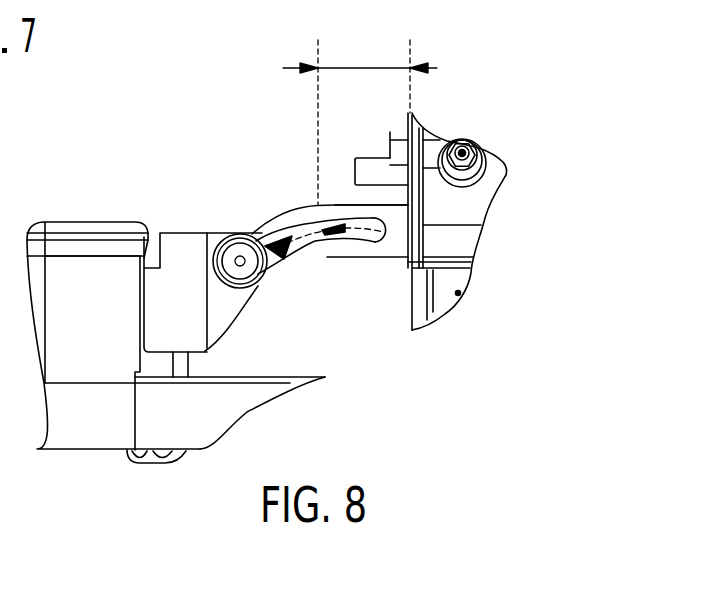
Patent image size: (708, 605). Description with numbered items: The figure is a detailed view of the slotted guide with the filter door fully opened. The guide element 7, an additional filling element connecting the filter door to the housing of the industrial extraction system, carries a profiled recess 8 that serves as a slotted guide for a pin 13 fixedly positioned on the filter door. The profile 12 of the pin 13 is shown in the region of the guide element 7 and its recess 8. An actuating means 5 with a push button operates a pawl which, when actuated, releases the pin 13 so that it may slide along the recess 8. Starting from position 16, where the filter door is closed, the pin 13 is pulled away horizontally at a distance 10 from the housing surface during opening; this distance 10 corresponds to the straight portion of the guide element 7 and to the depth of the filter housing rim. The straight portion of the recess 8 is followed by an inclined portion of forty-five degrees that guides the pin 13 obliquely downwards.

The actuating means 5 is at (238, 231).
The pin 13 is at (250, 247).
The profiled recess 8 is at (330, 242).
The profile 12 is at (297, 260).
The guide element 7 is at (323, 247).
The position 16 is at (378, 245).
The distance 10 is at (367, 65).